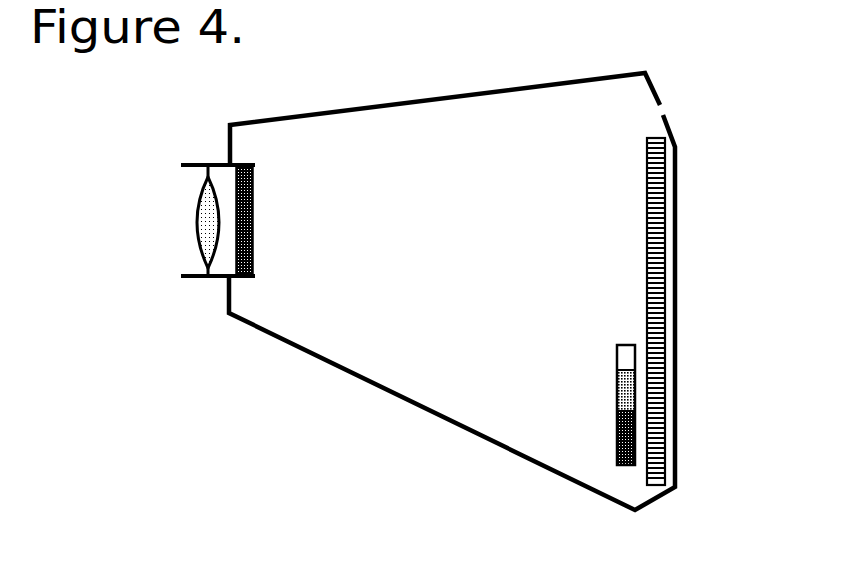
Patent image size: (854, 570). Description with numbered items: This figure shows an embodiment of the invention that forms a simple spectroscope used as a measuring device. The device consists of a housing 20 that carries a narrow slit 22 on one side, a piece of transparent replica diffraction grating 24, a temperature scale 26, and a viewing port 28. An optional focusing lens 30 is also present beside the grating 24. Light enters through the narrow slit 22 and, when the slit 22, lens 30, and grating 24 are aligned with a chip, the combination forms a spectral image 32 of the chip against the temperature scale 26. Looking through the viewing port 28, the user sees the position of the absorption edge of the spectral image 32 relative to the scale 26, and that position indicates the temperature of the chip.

The housing 20 is at (478, 92).
The narrow slit 22 is at (672, 108).
The transparent replica diffraction grating 24 is at (255, 202).
The temperature scale 26 is at (647, 243).
The viewing port 28 is at (185, 163).
The focusing lens 30 is at (205, 223).
The spectral image 32 is at (620, 390).